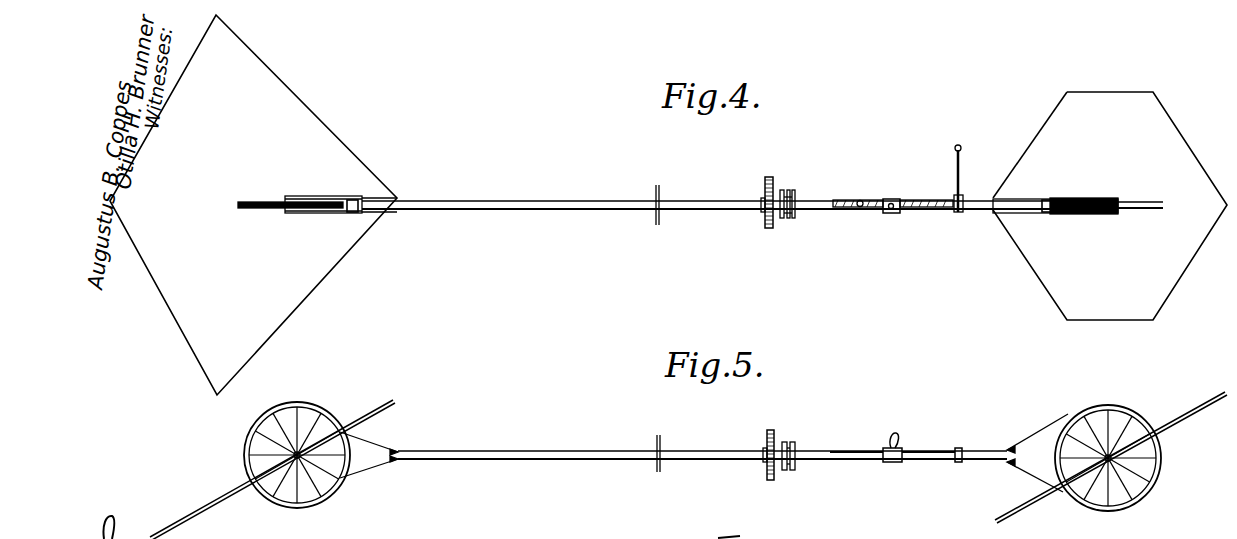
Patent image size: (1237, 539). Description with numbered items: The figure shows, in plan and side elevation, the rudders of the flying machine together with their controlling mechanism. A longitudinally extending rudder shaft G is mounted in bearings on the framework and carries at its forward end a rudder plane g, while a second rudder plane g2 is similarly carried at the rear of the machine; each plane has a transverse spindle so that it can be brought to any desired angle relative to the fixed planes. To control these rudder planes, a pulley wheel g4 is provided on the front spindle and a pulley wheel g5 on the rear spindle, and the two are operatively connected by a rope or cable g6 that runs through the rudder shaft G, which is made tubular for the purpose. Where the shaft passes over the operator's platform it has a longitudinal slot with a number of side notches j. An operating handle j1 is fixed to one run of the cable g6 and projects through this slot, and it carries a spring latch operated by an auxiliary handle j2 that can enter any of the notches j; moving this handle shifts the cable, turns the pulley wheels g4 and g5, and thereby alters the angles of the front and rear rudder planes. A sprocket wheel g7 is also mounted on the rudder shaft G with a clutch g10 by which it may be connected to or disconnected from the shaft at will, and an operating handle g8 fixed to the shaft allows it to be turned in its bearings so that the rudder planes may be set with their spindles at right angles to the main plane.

In FIG. 4, the rudder plane g is at (1110, 206).
In FIG. 5, the rudder plane g is at (1111, 457).
In FIG. 4, the second rudder plane g2 is at (253, 205).
In FIG. 5, the second rudder plane g2 is at (216, 497).
In FIG. 4, the pulley wheel g4 is at (1145, 200).
In FIG. 5, the pulley wheel g4 is at (1116, 410).
In FIG. 4, the pulley wheel g5 is at (274, 200).
In FIG. 5, the pulley wheel g5 is at (310, 403).
In FIG. 4, the rope or cable g6 is at (352, 214).
In FIG. 5, the rope or cable g6 is at (385, 441).
In FIG. 4, the sprocket wheel g7 is at (774, 182).
In FIG. 5, the sprocket wheel g7 is at (775, 440).
In FIG. 4, the operating handle g8 is at (961, 172).
In FIG. 5, the operating handle g8 is at (960, 447).
In FIG. 4, the clutch g10 is at (783, 221).
In FIG. 5, the clutch g10 is at (786, 472).
In FIG. 4, the rudder shaft G is at (694, 201).
In FIG. 5, the rudder shaft G is at (537, 460).
In FIG. 4, the side notches j is at (893, 190).
In FIG. 5, the side notches j is at (836, 450).
In FIG. 4, the operating handle j1 is at (896, 214).
In FIG. 5, the operating handle j1 is at (900, 446).
In FIG. 5, the auxiliary handle j2 is at (889, 435).